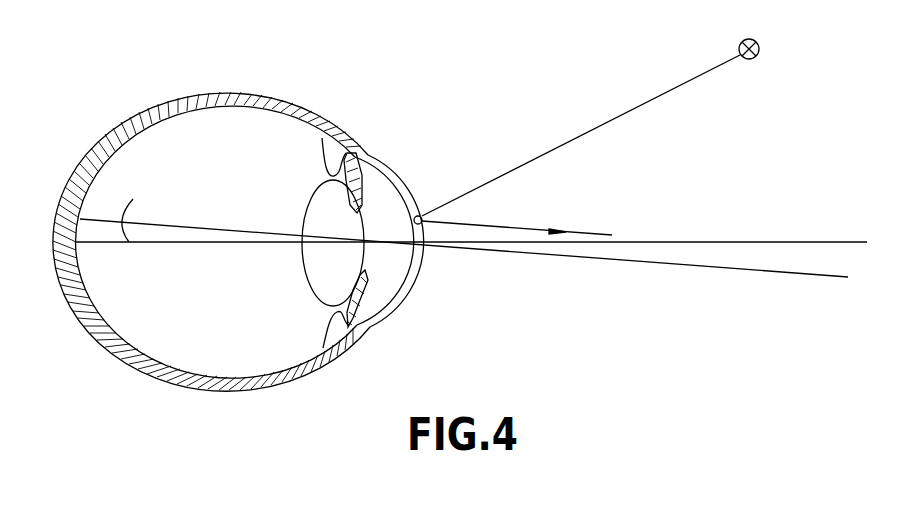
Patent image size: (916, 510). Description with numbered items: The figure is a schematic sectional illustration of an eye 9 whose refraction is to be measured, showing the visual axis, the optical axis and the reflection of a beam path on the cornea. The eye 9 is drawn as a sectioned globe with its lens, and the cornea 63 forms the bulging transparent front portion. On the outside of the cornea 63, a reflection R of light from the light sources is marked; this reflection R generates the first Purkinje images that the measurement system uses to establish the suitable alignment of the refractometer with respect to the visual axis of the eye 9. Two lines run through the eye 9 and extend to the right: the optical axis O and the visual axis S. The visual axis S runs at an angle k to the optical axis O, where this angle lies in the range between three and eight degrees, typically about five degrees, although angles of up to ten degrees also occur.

The eye 9 is at (203, 92).
The cornea 63 is at (385, 170).
The reflection R is at (422, 216).
The angle κ k is at (134, 213).
The optical axis O is at (483, 243).
The visual axis S is at (475, 256).